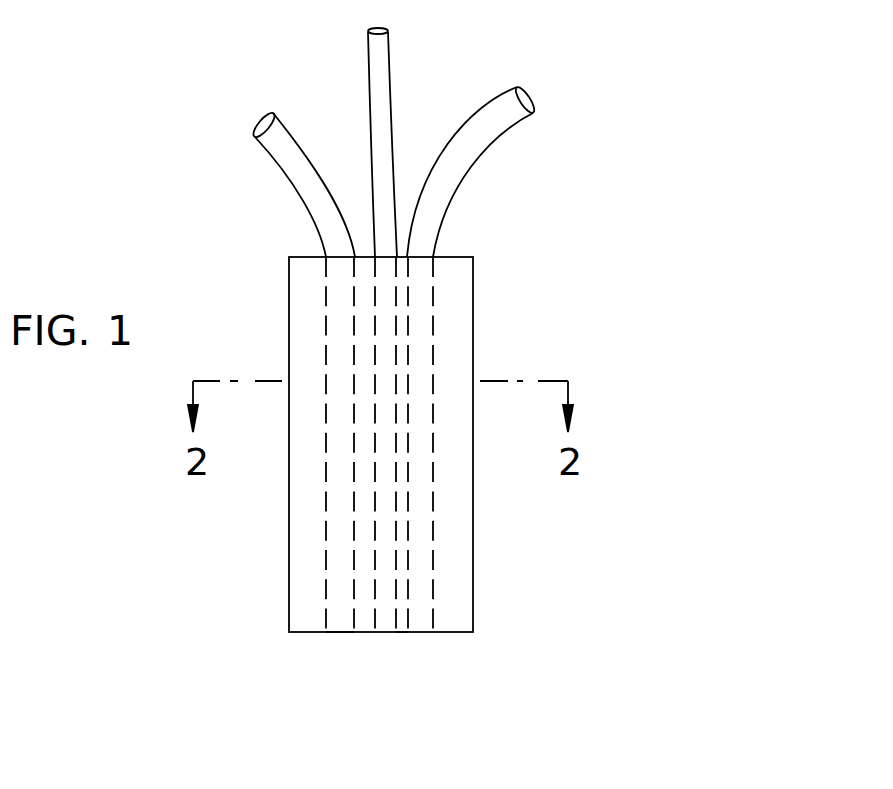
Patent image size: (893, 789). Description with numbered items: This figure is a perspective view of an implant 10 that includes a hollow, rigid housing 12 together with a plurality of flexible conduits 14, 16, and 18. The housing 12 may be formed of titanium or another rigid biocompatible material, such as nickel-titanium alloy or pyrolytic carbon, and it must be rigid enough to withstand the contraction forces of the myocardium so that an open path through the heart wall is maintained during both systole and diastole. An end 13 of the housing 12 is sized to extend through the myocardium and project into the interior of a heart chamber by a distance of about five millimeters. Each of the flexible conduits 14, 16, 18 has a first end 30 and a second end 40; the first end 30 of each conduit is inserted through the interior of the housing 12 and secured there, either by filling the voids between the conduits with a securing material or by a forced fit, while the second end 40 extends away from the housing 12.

The implant 10 is at (512, 539).
The housing 12 is at (313, 533).
The end of the housing 13 is at (400, 632).
The flexible conduit 14 is at (282, 152).
The flexible conduit 16 is at (380, 70).
The flexible conduit 18 is at (483, 115).
The first end 30 is at (340, 632).
The second end 40 is at (255, 128).